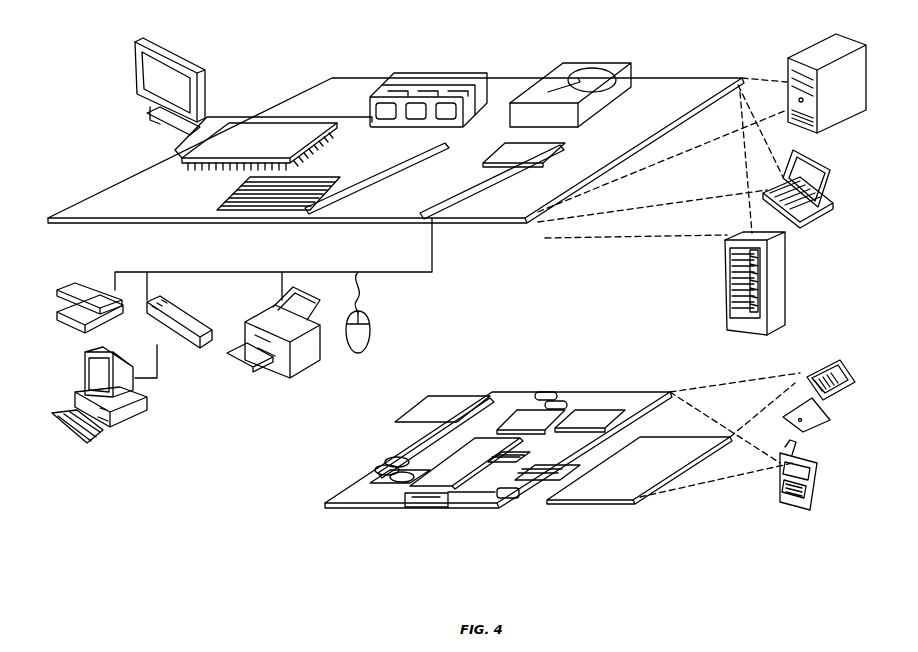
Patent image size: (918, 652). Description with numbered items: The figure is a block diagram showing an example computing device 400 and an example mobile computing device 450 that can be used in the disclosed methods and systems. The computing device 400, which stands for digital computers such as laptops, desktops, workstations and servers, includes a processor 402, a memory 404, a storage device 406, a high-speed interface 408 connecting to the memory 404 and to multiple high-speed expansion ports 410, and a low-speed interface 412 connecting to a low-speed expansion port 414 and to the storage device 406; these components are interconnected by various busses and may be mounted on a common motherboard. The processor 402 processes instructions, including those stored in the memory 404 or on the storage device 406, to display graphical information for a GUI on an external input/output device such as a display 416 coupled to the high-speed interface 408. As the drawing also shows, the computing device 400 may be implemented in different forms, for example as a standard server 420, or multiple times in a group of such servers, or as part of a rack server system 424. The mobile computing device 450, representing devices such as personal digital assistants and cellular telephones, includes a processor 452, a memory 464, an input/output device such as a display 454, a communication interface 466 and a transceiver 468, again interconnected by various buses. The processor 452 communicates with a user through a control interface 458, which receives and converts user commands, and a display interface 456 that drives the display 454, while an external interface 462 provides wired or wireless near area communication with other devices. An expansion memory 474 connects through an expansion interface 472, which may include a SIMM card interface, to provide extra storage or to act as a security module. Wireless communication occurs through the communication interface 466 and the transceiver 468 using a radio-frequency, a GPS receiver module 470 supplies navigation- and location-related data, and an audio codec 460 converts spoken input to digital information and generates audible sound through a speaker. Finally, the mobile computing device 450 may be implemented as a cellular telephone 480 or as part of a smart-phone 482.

The computing device 400 is at (273, 53).
The processor 402 is at (157, 160).
The memory 404 is at (410, 73).
The storage device 406 is at (570, 63).
The high-speed interface 408 is at (347, 113).
The high-speed expansion ports 410 is at (213, 192).
The low-speed interface 412 is at (503, 147).
The low-speed expansion port 414 is at (447, 222).
The display 416 is at (137, 42).
The standard server 420 is at (787, 63).
The rack server system 424 is at (723, 297).
The mobile computing device 450 is at (307, 511).
The processor 452 is at (440, 507).
The display 454 is at (613, 496).
The display interface 456 is at (500, 503).
The control interface 458 is at (525, 500).
The audio codec 460 is at (537, 493).
The external interface 462 is at (415, 513).
The memory 464 is at (387, 465).
The communication interface 466 is at (528, 392).
The transceiver 468 is at (580, 386).
The GPS receiver module 470 is at (563, 390).
The expansion interface 472 is at (467, 403).
The expansion memory 474 is at (427, 398).
The cellular telephone 480 is at (817, 341).
The smart-phone 482 is at (773, 487).